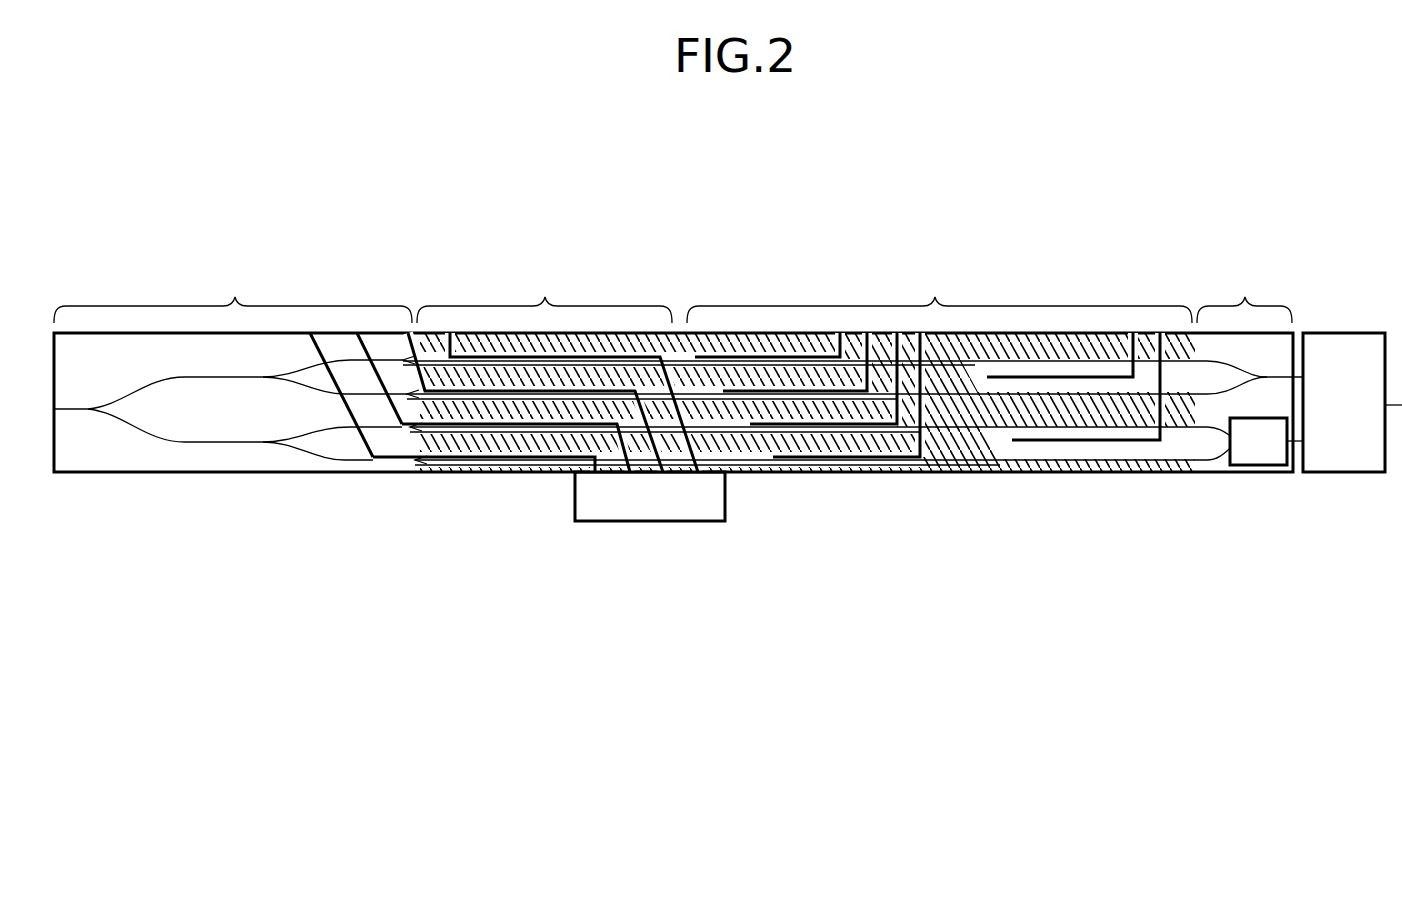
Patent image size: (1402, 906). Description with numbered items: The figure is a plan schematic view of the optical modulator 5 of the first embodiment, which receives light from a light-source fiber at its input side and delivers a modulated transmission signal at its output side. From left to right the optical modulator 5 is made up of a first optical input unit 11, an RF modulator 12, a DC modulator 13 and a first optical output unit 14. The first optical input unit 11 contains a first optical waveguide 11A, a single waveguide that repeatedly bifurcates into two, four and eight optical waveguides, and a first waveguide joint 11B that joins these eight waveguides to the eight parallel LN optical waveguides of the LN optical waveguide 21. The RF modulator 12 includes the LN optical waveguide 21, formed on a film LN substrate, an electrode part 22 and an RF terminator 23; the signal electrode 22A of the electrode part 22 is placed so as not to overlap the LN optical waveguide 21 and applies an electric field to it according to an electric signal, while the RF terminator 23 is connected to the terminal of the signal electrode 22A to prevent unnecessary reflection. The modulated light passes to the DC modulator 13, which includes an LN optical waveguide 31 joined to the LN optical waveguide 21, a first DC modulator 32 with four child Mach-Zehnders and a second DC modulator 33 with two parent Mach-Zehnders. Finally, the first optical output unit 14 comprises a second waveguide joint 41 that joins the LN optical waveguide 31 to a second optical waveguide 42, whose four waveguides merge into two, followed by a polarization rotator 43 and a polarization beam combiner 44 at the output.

The optical modulator 5 is at (1317, 143).
The first optical input unit 11 is at (255, 403).
The first optical waveguide 11A is at (213, 444).
The first waveguide joint 11B is at (445, 398).
The RF modulator 12 is at (544, 295).
The DC modulator 13 is at (805, 366).
The first optical output unit 14 is at (1244, 295).
The LN optical waveguide 21 is at (432, 362).
The electrode part 22 is at (507, 356).
The signal electrode 22A is at (362, 331).
The RF terminator 23 is at (650, 522).
The LN optical waveguide 31 is at (722, 343).
The first DC modulator 32 is at (798, 355).
The second DC modulator 33 is at (1087, 430).
The second waveguide joint 41 is at (1207, 470).
The second optical waveguide 42 is at (1208, 346).
The polarization rotator 43 is at (1256, 467).
The polarization beam combiner 44 is at (1343, 333).